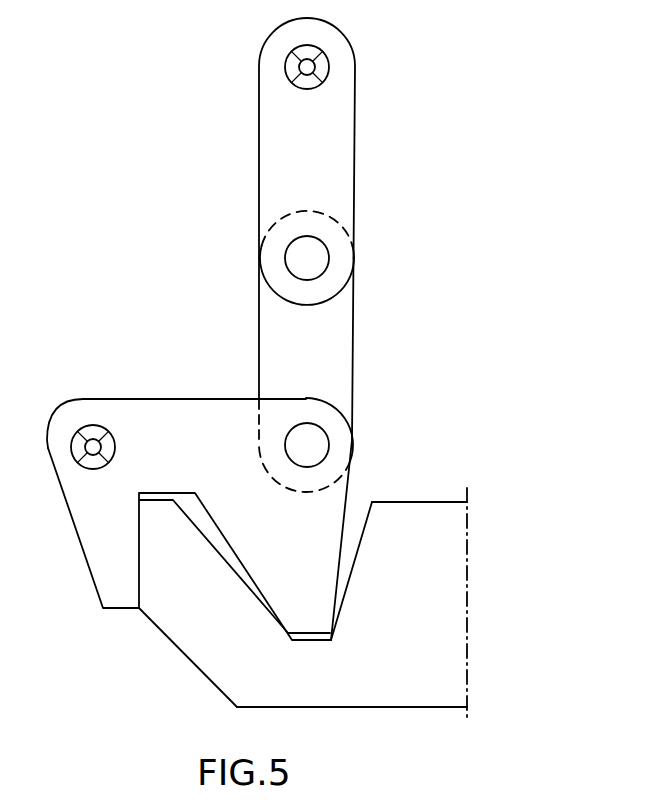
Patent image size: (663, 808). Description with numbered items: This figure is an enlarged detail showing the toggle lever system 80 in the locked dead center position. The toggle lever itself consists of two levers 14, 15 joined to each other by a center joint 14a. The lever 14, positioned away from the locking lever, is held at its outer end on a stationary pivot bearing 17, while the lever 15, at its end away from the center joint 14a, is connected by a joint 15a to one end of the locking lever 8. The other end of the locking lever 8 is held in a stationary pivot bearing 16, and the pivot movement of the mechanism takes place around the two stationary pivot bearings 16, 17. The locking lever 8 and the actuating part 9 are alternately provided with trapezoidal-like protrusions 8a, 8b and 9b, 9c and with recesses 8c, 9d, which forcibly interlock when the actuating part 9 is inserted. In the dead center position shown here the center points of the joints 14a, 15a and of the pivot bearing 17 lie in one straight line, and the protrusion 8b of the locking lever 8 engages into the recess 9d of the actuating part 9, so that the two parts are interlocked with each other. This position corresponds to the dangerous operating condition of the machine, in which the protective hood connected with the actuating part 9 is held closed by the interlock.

The locking lever 8 is at (333, 498).
The trapezoidal protrusion 8a is at (98, 532).
The trapezoidal protrusion 8b is at (311, 575).
The recess 8c is at (217, 525).
The actuating part 9 is at (425, 675).
The trapezoidal protrusion 9b is at (447, 550).
The trapezoidal protrusion 9c is at (182, 617).
The recess 9d is at (353, 568).
The lever 14 is at (337, 158).
The center joint 14a is at (315, 248).
The lever 15 is at (337, 340).
The joint 15a is at (317, 438).
The stationary pivot bearing 16 is at (89, 425).
The stationary pivot bearing 17 is at (323, 55).
The toggle lever system 80 is at (358, 296).